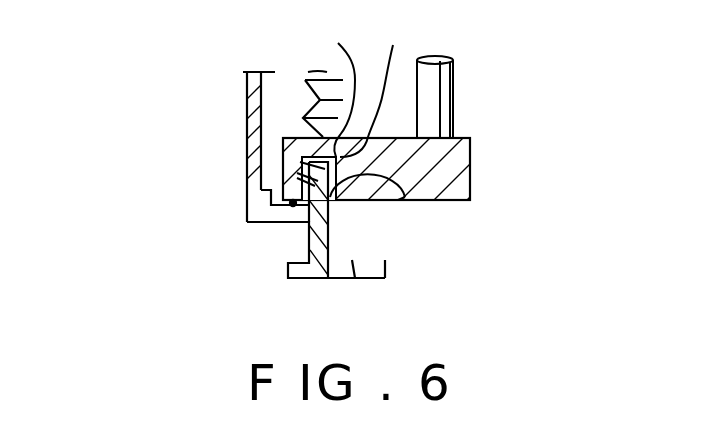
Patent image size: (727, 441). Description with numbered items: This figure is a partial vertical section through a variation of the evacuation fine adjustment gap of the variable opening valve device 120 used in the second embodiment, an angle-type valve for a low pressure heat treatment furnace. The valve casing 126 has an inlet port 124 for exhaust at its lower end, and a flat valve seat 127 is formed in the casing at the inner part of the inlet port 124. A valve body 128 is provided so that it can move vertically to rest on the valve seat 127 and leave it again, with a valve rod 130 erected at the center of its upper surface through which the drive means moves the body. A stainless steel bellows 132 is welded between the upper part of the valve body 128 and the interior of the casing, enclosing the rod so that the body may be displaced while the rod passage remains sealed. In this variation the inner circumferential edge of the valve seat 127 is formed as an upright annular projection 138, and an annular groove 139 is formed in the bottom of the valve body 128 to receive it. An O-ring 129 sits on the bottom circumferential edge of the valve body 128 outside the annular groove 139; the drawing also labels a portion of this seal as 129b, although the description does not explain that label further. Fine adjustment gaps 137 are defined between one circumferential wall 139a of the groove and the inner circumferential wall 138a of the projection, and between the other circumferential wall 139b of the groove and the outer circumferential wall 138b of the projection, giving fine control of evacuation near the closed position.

The variable opening valve device 120 is at (487, 56).
The inlet port 124 is at (355, 280).
The valve casing 126 is at (247, 80).
The valve seat 127 is at (270, 197).
The valve body 128 is at (472, 173).
The O-ring 129 is at (291, 206).
The fastener portion 129b is at (300, 162).
The valve rod 130 is at (443, 98).
The bellows 132 is at (303, 80).
The evacuation fine adjustment gap 137 is at (310, 207).
The upright annular projection 138 is at (331, 82).
The inner circumferential wall of the projection 138a is at (343, 200).
The outer circumferential wall of the projection 138b is at (297, 178).
The annular groove 139 is at (381, 82).
The one circumferential wall of the groove 139a is at (401, 188).
The other circumferential wall of the groove 139b is at (297, 173).